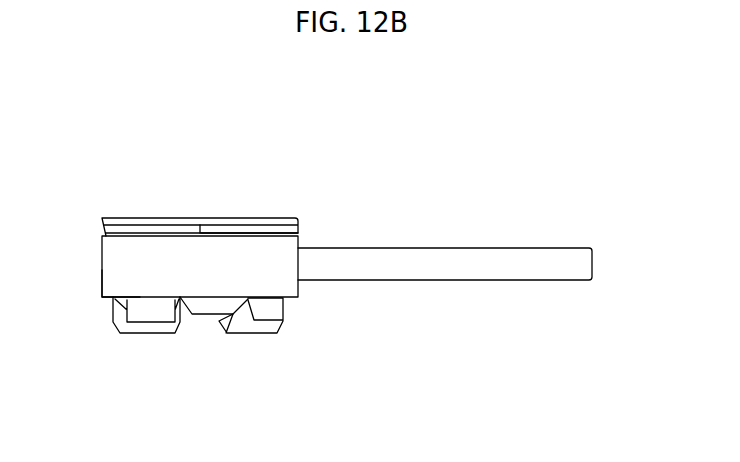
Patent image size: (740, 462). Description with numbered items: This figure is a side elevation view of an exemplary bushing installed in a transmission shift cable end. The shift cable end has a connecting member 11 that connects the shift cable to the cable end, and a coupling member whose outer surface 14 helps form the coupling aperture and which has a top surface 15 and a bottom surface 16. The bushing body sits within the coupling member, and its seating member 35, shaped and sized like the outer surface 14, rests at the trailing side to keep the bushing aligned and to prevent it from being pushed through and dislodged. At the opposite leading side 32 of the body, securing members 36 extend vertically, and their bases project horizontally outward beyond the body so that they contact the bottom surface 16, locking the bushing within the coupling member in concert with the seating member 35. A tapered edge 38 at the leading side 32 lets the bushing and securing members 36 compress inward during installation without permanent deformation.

The connecting member 11 is at (457, 260).
The outer surface 14 is at (263, 257).
The top surface 15 is at (102, 218).
The bottom surface 16 is at (103, 298).
The leading side 32 is at (190, 316).
The seating member 35 is at (233, 227).
The securing members 36 is at (267, 316).
The tapered edge 38 is at (205, 310).